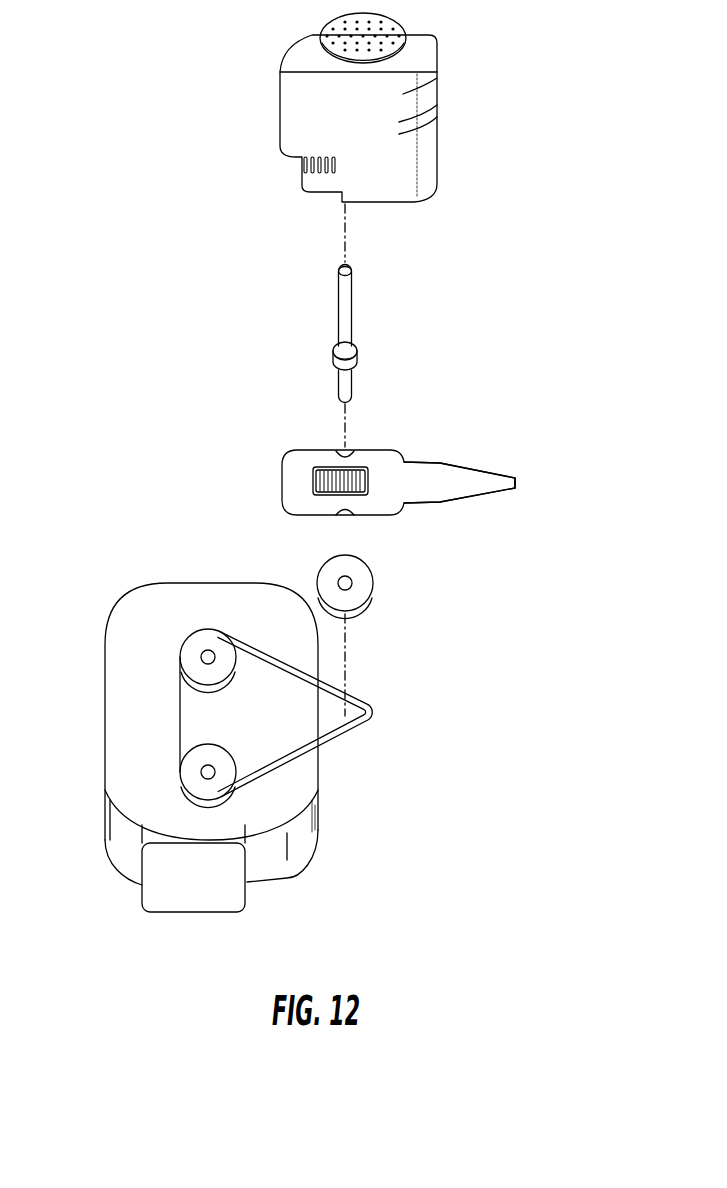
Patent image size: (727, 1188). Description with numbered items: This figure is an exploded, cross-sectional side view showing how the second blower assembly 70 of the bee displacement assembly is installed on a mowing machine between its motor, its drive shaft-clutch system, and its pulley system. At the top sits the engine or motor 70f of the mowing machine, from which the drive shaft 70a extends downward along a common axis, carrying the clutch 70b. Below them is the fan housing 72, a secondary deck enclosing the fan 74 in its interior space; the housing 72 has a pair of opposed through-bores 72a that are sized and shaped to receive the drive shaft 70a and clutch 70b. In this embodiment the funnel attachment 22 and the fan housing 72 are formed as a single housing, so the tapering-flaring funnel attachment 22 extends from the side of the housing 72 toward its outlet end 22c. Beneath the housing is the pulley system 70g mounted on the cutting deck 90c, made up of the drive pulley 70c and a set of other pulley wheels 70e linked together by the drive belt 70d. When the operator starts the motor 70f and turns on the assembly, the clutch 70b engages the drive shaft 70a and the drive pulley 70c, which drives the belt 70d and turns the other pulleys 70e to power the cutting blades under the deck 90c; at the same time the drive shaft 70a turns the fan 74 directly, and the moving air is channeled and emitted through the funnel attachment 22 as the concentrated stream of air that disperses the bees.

The second blower assembly 70 is at (227, 468).
The drive shaft 70a is at (338, 290).
The clutch 70b is at (357, 353).
The drive pulley 70c is at (358, 595).
The drive belt 70d is at (365, 745).
The pulley wheels 70e is at (197, 757).
The motor 70f is at (437, 80).
The pulley system 70g is at (390, 705).
The fan housing 72 is at (297, 463).
The through-bores 72a is at (350, 452).
The fan 74 is at (323, 485).
The funnel attachment 22 is at (477, 468).
The cable end 22c is at (517, 478).
The cutting deck 90c is at (290, 832).